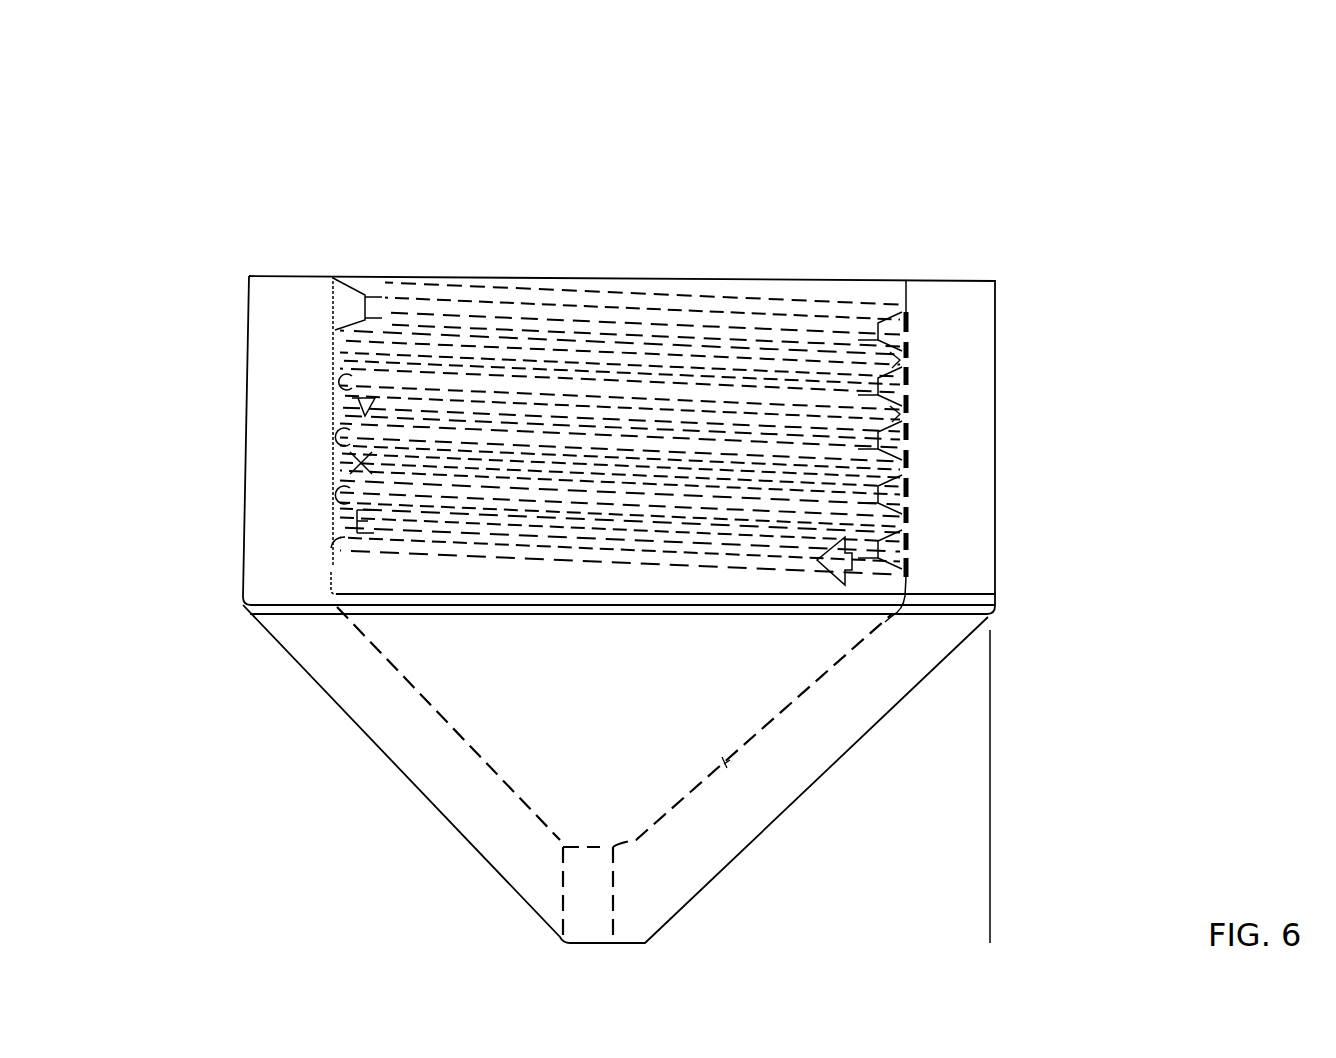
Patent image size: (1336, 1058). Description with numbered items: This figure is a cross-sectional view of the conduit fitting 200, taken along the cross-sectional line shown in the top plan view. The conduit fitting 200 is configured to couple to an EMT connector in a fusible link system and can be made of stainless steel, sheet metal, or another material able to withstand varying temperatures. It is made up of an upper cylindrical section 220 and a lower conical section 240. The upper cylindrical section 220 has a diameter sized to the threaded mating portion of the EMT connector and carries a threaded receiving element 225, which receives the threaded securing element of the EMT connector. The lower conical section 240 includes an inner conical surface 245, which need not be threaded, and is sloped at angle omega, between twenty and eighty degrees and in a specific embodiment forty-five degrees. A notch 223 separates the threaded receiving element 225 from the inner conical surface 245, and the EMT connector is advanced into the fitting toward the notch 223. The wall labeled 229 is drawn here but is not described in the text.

The conduit fitting 200 is at (983, 178).
The upper cylindrical section 220 is at (1008, 410).
The notch 223 is at (287, 604).
The threaded receiving element 225 is at (337, 423).
The side wall 229 is at (236, 438).
The lower conical section 240 is at (390, 780).
The inner conical surface 245 is at (503, 762).